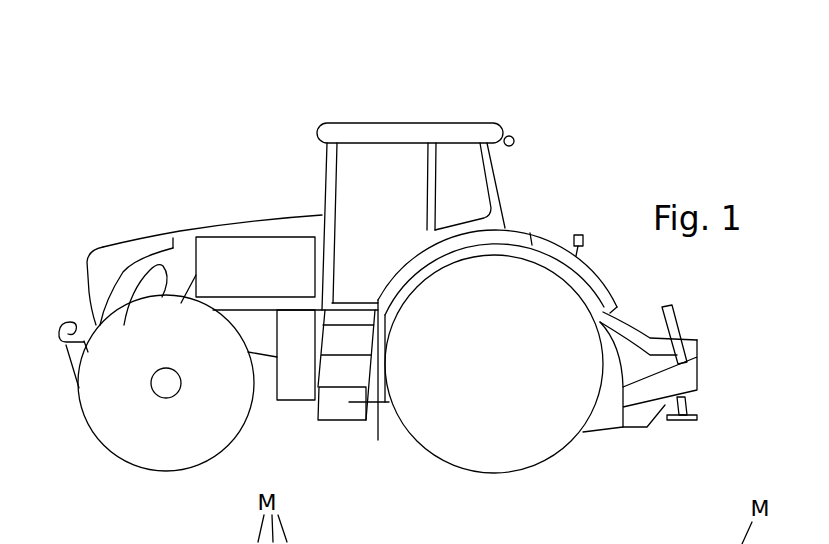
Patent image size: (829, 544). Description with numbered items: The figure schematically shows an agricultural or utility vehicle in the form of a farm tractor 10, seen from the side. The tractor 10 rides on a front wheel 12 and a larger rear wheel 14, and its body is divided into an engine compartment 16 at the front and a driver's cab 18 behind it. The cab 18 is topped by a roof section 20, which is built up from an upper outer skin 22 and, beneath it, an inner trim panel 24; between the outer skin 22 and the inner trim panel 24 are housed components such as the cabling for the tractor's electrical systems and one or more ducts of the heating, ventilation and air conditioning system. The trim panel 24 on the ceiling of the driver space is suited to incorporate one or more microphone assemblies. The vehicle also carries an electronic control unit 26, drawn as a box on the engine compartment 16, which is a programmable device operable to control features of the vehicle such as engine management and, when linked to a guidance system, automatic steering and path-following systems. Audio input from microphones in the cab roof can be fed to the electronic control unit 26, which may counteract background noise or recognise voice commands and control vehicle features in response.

The tractor 10 is at (148, 176).
The front wheel 12 is at (191, 432).
The rear wheel 14 is at (557, 423).
The engine compartment 16 is at (132, 262).
The driver's cab 18 is at (460, 168).
The roof section 20 is at (428, 128).
The outer skin 22 is at (469, 105).
The inner trim panel 24 is at (383, 135).
The electronic control unit 26 is at (295, 277).